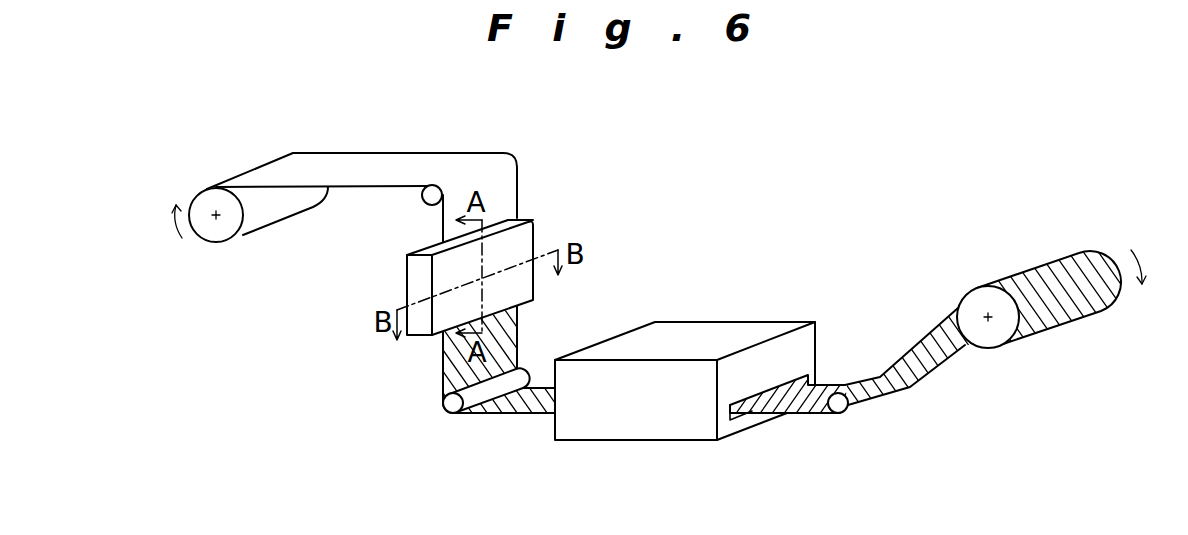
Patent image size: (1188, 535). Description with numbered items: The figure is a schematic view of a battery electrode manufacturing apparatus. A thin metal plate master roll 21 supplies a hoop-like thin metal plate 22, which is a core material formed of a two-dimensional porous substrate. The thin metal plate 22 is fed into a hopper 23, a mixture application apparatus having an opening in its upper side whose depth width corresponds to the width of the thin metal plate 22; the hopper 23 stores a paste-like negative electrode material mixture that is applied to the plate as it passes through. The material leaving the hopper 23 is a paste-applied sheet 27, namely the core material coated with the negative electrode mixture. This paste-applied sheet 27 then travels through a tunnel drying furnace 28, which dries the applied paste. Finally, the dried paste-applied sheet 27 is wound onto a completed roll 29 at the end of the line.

The thin metal plate master roll 21 is at (222, 230).
The thin metal plate 22 is at (433, 151).
The hopper 23 is at (537, 232).
The paste-applied sheet 27 is at (456, 368).
The tunnel drying furnace 28 is at (640, 440).
The completed roll 29 is at (1043, 332).